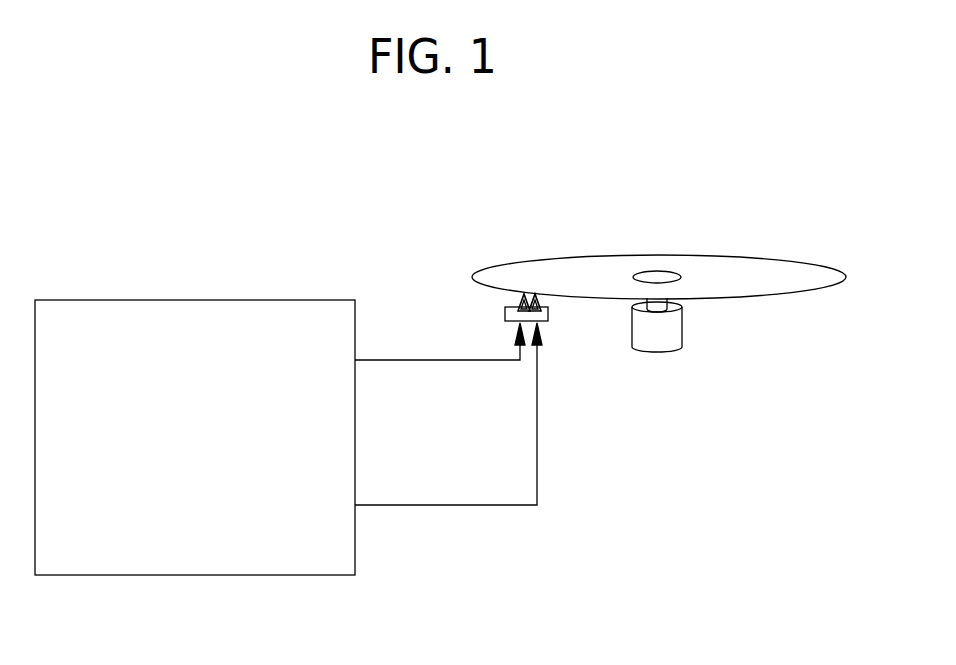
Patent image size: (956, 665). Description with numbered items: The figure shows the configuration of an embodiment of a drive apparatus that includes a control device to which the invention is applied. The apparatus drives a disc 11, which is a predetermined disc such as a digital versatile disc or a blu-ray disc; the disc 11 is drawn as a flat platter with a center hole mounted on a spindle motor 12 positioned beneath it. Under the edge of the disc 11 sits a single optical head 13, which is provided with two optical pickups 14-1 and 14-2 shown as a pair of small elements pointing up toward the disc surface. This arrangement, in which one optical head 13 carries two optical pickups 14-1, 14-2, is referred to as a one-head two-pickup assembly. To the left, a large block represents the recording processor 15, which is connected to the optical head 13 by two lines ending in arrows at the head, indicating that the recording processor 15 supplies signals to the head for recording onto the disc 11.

The disc 11 is at (654, 254).
The spindle motor 12 is at (683, 331).
The optical head 13 is at (504, 315).
The optical pickup 14-1 is at (521, 300).
The optical pickup 14-2 is at (541, 302).
The recording processor 15 is at (258, 300).